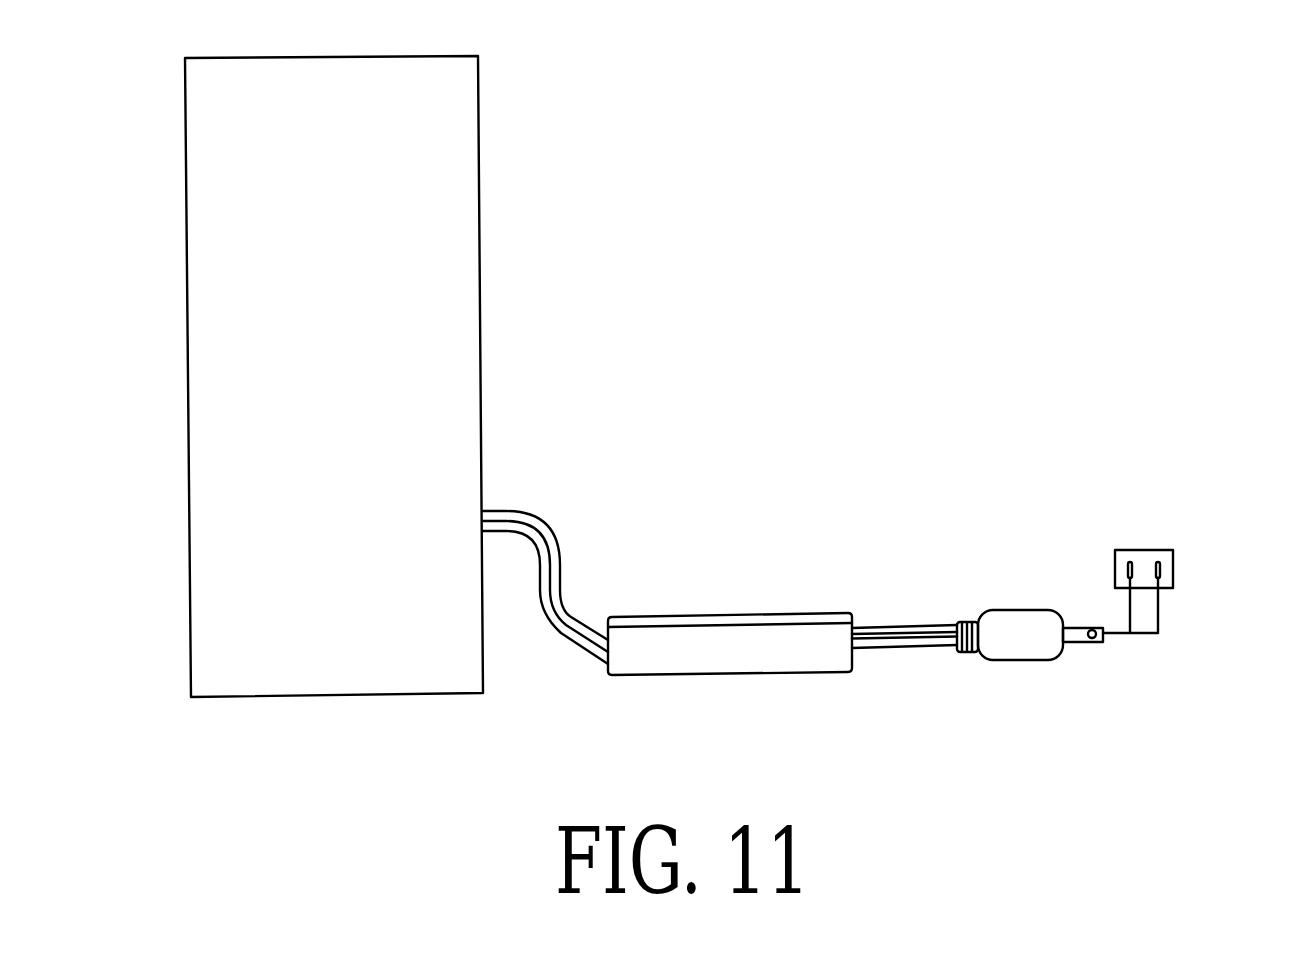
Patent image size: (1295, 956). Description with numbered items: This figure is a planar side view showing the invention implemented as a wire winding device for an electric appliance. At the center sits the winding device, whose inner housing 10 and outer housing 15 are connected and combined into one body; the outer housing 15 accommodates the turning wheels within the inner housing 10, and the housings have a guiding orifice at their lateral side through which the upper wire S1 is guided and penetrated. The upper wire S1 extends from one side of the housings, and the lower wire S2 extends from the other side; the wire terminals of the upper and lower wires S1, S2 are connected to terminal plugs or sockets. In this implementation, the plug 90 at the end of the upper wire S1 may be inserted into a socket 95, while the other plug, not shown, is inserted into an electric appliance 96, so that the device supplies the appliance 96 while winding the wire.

The electric appliance 96 is at (415, 197).
The lower wire S2 is at (537, 547).
The inner housing 10 is at (705, 658).
The outer housing 15 is at (715, 618).
The upper wire S1 is at (883, 630).
The plug 90 is at (1027, 637).
The socket 95 is at (1145, 557).